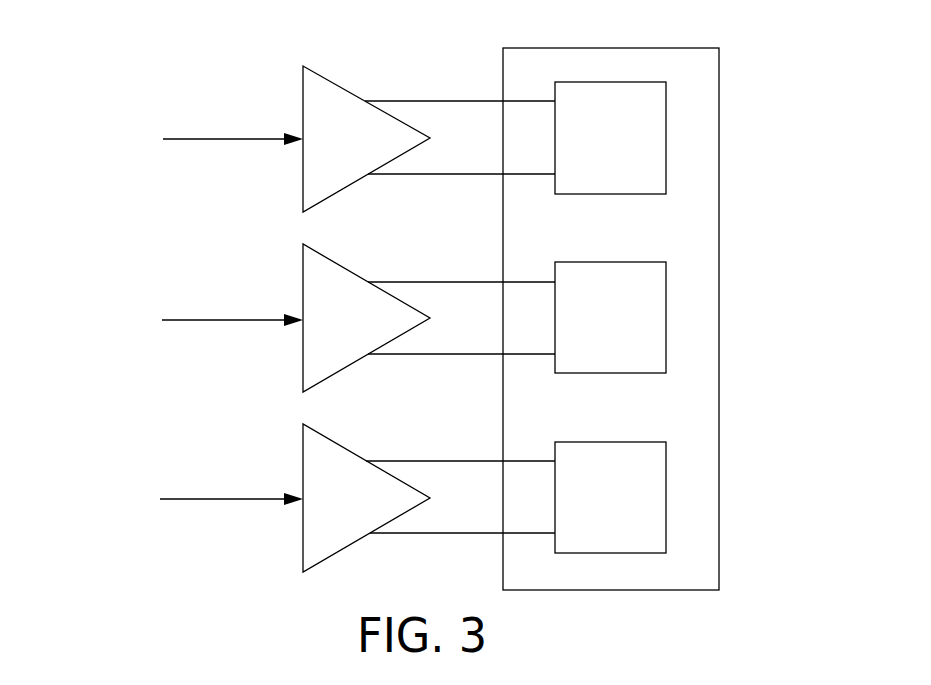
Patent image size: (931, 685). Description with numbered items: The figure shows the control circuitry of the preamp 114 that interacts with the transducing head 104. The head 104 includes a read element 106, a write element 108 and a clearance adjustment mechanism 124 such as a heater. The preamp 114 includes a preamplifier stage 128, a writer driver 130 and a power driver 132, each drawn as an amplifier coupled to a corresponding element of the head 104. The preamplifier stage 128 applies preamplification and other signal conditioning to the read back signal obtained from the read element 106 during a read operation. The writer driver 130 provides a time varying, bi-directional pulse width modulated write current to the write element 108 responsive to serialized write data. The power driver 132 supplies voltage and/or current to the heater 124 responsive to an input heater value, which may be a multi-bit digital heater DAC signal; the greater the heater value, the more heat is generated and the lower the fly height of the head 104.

The preamp 114 is at (255, 39).
The preamplifier stage 128 is at (340, 78).
The writer driver 130 is at (339, 260).
The power driver 132 is at (340, 440).
The transducing head 104 is at (719, 100).
The read element 106 is at (666, 147).
The write element 108 is at (666, 318).
The clearance adjustment mechanism 124 is at (666, 492).